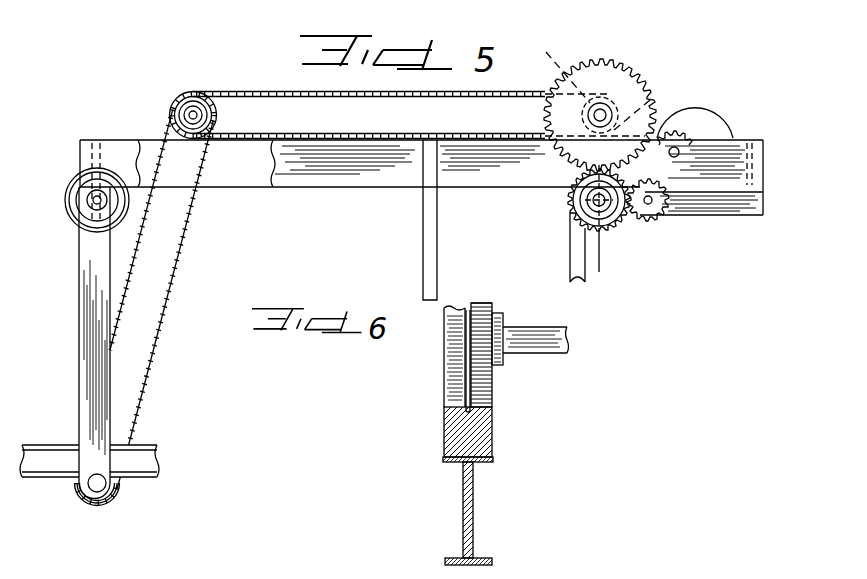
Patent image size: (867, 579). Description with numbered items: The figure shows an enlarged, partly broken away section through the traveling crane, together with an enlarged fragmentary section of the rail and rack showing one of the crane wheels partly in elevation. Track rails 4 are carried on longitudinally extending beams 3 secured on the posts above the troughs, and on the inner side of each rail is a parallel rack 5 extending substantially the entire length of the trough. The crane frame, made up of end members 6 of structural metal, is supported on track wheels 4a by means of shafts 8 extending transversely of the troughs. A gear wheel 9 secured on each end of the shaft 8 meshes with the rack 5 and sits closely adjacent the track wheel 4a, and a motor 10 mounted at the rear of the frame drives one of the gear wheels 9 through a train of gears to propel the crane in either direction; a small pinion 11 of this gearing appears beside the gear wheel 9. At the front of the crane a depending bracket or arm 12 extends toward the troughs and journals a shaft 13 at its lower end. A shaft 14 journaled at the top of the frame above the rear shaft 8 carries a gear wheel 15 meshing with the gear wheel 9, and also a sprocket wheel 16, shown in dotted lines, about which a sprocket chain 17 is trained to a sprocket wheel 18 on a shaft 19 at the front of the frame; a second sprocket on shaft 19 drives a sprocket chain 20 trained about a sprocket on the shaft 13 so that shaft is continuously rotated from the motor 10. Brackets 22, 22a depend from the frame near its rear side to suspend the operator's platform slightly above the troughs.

In FIG. 6, the longitudinally extending beam 3 is at (470, 490).
In FIG. 6, the track rail 4 is at (455, 421).
In FIG. 5, the track wheel 4a is at (68, 205).
In FIG. 6, the track wheel 4a is at (446, 362).
In FIG. 6, the rack 5 is at (485, 410).
In FIG. 5, the end member 6 is at (597, 252).
In FIG. 5, the shaft 8 is at (95, 198).
In FIG. 6, the shaft 8 is at (552, 337).
In FIG. 6, the gear wheel 9 is at (488, 304).
In FIG. 5, the motor 10 is at (702, 122).
In FIG. 5, the pinion 11 is at (650, 202).
In FIG. 5, the depending bracket or arm 12 is at (88, 347).
In FIG. 5, the shaft 13 is at (101, 485).
In FIG. 5, the shaft 14 is at (605, 112).
In FIG. 5, the gear wheel 15 is at (600, 63).
In FIG. 5, the sprocket wheel 16 is at (558, 60).
In FIG. 5, the sprocket chain 17 is at (276, 86).
In FIG. 5, the sprocket wheel 18 is at (203, 97).
In FIG. 5, the shaft 19 is at (191, 110).
In FIG. 5, the sprocket chain 20 is at (198, 222).
In FIG. 5, the bracket 22 is at (579, 262).
In FIG. 5, the bracket 22a is at (425, 257).